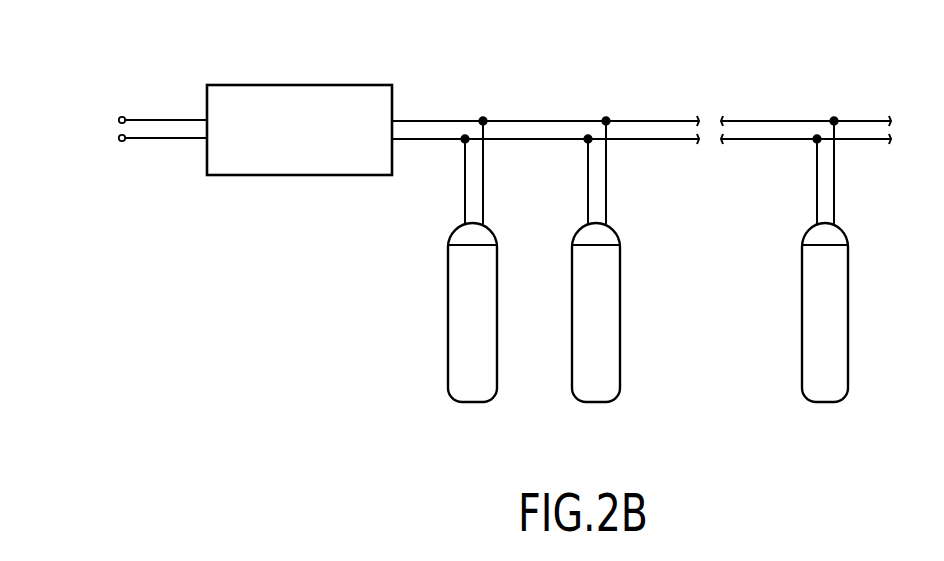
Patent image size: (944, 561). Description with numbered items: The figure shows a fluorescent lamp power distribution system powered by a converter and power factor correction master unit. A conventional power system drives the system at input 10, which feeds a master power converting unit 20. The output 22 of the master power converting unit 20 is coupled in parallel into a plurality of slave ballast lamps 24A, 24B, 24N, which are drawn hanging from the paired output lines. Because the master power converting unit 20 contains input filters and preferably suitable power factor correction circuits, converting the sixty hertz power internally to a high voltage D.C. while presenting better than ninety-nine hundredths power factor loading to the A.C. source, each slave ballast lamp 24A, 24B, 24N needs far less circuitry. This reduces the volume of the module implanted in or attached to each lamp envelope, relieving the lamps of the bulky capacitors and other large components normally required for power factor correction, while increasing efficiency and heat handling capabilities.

The input 10 is at (92, 116).
The master power converting unit 20 is at (317, 145).
The output 22 is at (443, 105).
The slave ballast lamp 24A is at (448, 338).
The slave ballast lamp 24B is at (572, 312).
The slave ballast lamp 24N is at (802, 312).